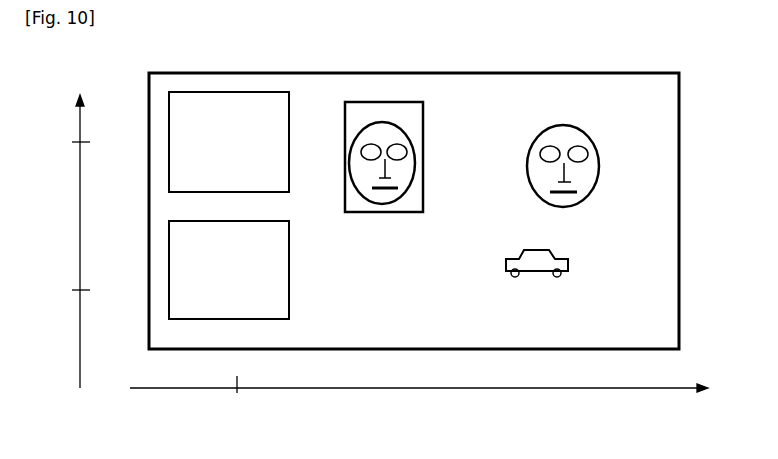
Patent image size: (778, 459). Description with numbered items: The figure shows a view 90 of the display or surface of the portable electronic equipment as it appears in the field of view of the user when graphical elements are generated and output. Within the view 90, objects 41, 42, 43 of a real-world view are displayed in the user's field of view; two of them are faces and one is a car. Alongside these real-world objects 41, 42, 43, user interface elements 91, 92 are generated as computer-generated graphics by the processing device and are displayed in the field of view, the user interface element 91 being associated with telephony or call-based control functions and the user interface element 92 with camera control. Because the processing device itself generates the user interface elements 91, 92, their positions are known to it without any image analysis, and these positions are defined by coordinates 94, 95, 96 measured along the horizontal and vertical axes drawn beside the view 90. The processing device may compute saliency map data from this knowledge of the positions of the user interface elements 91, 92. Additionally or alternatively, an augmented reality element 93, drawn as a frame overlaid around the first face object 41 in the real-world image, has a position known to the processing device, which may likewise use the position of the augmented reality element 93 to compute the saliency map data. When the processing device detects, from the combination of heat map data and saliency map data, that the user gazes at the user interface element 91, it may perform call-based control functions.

The view 90 is at (148, 88).
The user interface element 91 is at (168, 172).
The user interface element 92 is at (168, 302).
The augmented reality element 93 is at (424, 125).
The coordinate 94 is at (237, 395).
The coordinate 95 is at (73, 291).
The coordinate 96 is at (73, 144).
The object 41 is at (351, 184).
The object 42 is at (532, 146).
The object 43 is at (500, 264).